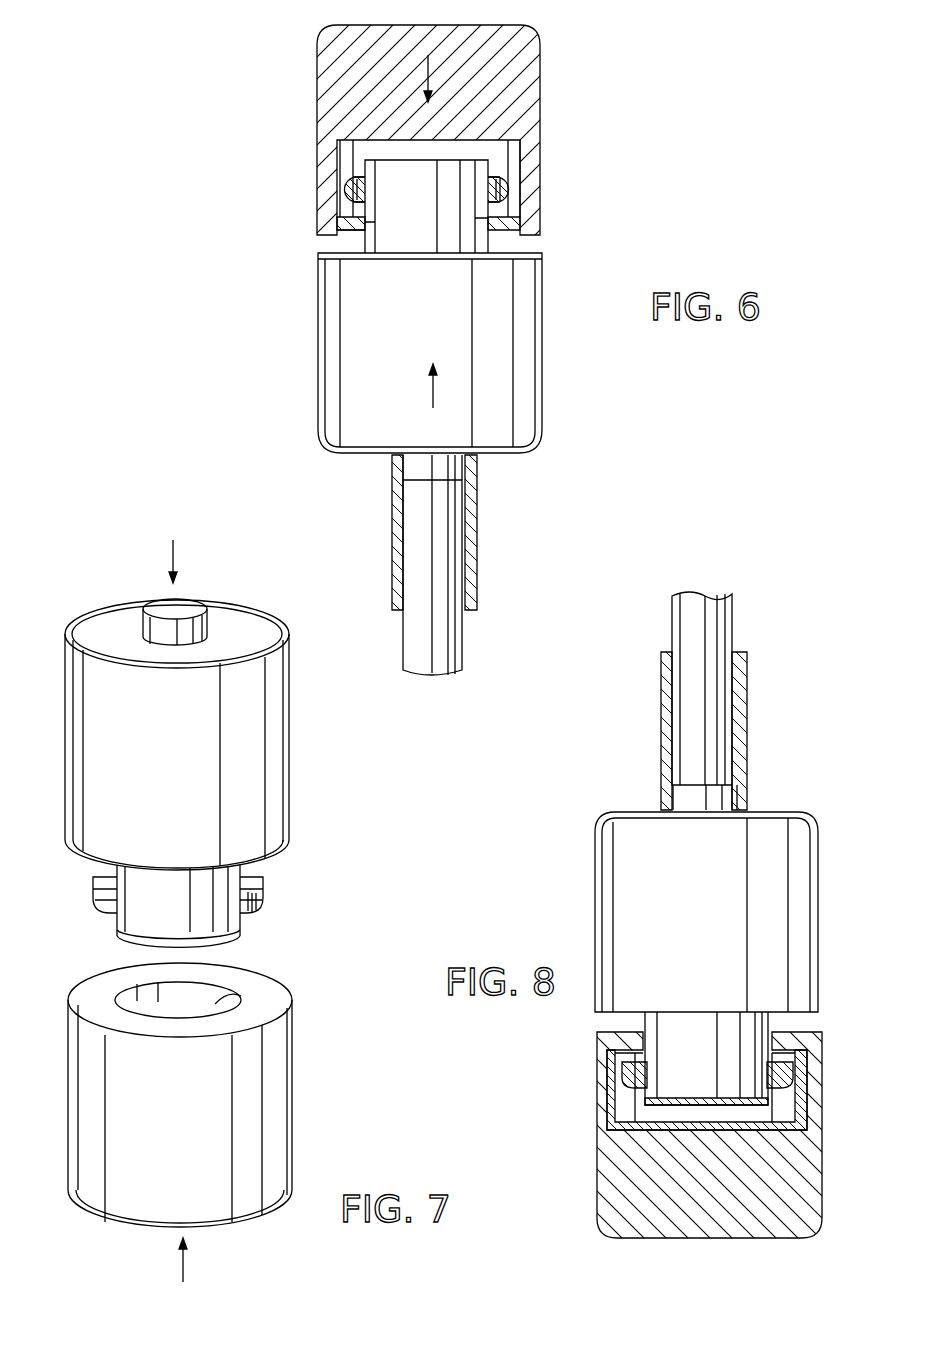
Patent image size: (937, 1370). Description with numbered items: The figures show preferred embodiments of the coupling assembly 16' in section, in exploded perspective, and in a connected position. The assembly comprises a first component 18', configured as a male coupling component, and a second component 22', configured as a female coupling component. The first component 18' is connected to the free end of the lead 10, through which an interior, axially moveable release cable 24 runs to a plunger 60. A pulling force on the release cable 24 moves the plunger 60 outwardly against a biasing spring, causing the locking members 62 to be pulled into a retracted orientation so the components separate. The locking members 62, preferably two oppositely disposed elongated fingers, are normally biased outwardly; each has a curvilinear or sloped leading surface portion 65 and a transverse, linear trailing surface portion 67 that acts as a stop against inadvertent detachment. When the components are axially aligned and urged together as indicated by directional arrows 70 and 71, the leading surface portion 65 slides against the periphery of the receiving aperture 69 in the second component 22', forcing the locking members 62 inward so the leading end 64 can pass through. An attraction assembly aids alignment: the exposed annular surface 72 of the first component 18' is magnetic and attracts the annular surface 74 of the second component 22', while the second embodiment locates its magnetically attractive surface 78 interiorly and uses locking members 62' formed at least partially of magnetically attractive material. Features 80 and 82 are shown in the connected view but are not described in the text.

In FIG. 6, the coupling assembly 16' is at (407, 348).
In FIG. 6, the lead 10 is at (477, 526).
In FIG. 8, the lead 10 is at (748, 737).
In FIG. 6, the first component 18' is at (478, 353).
In FIG. 7, the first component 18' is at (219, 735).
In FIG. 8, the first component 18' is at (661, 912).
In FIG. 6, the second component 22' is at (475, 130).
In FIG. 7, the second component 22' is at (227, 1095).
In FIG. 8, the second component 22' is at (668, 1135).
In FIG. 6, the release cable 24 is at (466, 645).
In FIG. 8, the release cable 24 is at (713, 620).
In FIG. 6, the plunger 60 is at (417, 470).
In FIG. 7, the plunger 60 is at (187, 605).
In FIG. 8, the plunger 60 is at (688, 797).
In FIG. 6, the locking members 62 is at (422, 181).
In FIG. 7, the locking members 62 is at (180, 895).
In FIG. 8, the locking members 62' is at (700, 1058).
In FIG. 6, the leading end 64 is at (398, 163).
In FIG. 7, the leading end 64 is at (130, 913).
In FIG. 8, the leading end 64 is at (668, 1104).
In FIG. 6, the leading surface portion 65 is at (355, 185).
In FIG. 7, the leading surface portion 65 is at (103, 913).
In FIG. 6, the trailing surface portion 67 is at (334, 218).
In FIG. 7, the trailing surface portion 67 is at (100, 877).
In FIG. 6, the receiving aperture 69 is at (369, 221).
In FIG. 7, the receiving aperture 69 is at (218, 1015).
In FIG. 6, the directional arrow 70 is at (427, 88).
In FIG. 7, the directional arrow 70 is at (168, 558).
In FIG. 6, the directional arrow 71 is at (431, 391).
In FIG. 7, the directional arrow 71 is at (181, 1252).
In FIG. 6, the exposed annular surface 72 is at (525, 253).
In FIG. 6, the annular surface 74 is at (333, 233).
In FIG. 7, the magnetically attractive surface 78 is at (220, 937).
In FIG. 8, the magnetically attractive surface 78 is at (688, 1097).
In FIG. 8, the recess 80 is at (638, 1127).
In FIG. 8, the liner 82 is at (612, 1104).